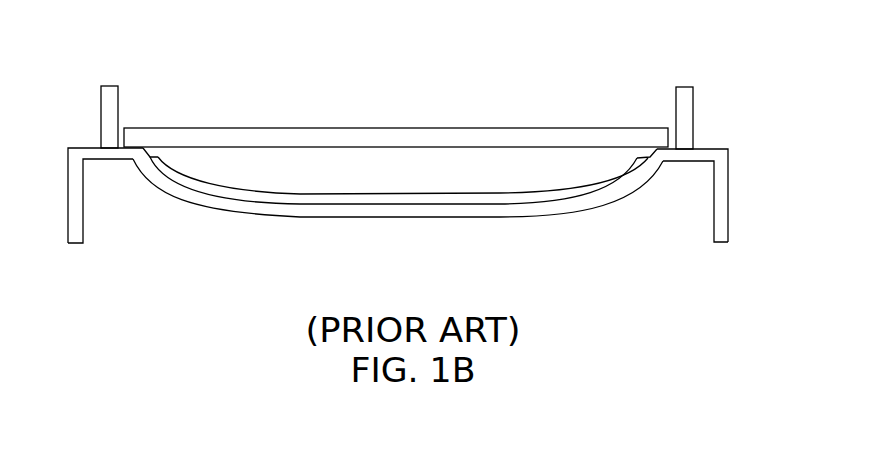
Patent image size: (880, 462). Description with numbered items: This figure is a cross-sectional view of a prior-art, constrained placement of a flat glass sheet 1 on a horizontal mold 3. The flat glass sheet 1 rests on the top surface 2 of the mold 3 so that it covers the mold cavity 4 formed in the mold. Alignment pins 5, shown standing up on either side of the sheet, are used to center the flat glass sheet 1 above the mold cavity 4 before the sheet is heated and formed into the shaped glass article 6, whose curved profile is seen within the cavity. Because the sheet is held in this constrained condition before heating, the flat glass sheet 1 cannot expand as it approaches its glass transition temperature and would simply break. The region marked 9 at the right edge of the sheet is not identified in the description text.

The flat glass sheet 1 is at (395, 127).
The top surface 2 is at (121, 146).
The horizontal mold 3 is at (416, 174).
The mold cavity 4 is at (503, 178).
The alignment pins 5 is at (109, 85).
The shaped glass article 6 is at (300, 198).
The junction (right) 9 is at (652, 152).